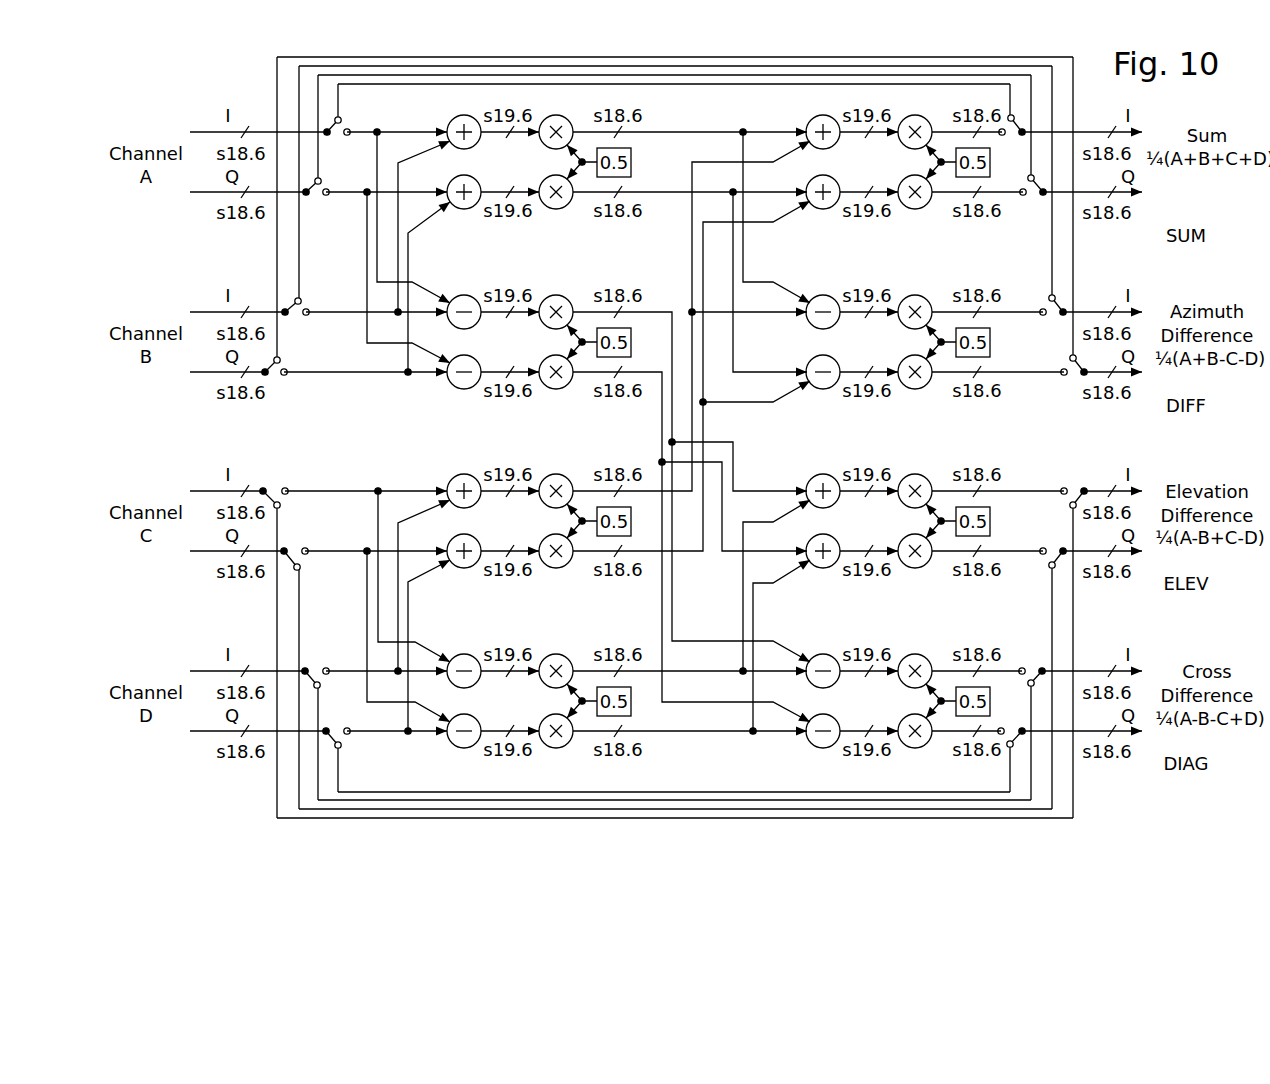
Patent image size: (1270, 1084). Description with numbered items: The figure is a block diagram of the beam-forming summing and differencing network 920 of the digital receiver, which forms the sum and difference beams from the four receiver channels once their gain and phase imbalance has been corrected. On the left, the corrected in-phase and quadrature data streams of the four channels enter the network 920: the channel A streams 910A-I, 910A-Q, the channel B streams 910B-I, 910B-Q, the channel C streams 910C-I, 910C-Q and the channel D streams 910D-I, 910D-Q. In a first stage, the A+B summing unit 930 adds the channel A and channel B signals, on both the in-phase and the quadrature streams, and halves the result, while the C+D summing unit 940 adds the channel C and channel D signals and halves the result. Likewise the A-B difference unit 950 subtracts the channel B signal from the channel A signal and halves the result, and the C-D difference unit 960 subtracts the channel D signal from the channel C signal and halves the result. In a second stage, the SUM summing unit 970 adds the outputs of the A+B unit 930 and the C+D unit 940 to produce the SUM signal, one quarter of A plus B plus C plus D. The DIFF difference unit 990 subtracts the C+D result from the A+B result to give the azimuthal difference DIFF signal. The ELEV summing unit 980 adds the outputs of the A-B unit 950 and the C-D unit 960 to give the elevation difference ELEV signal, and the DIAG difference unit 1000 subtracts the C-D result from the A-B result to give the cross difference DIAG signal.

The summing and differencing network 920 is at (256, 88).
The corrected in-phase data stream 910A-I is at (200, 131).
The corrected quadrature data stream 910A-Q is at (200, 194).
The corrected in-phase data stream 910B-I is at (200, 311).
The corrected quadrature data stream 910B-Q is at (200, 374).
The corrected in-phase data stream 910C-I is at (200, 490).
The corrected quadrature data stream 910C-Q is at (200, 553).
The corrected in-phase data stream 910D-I is at (200, 670).
The corrected quadrature data stream 910D-Q is at (200, 733).
The A+B summing unit 930 is at (550, 230).
The A-B difference unit 950 is at (475, 410).
The C+D summing unit 940 is at (548, 590).
The C-D difference unit 960 is at (455, 763).
The SUM summing unit 970 is at (908, 230).
The DIFF difference unit 990 is at (908, 410).
The ELEV summing unit 980 is at (908, 590).
The DIAG difference unit 1000 is at (827, 763).